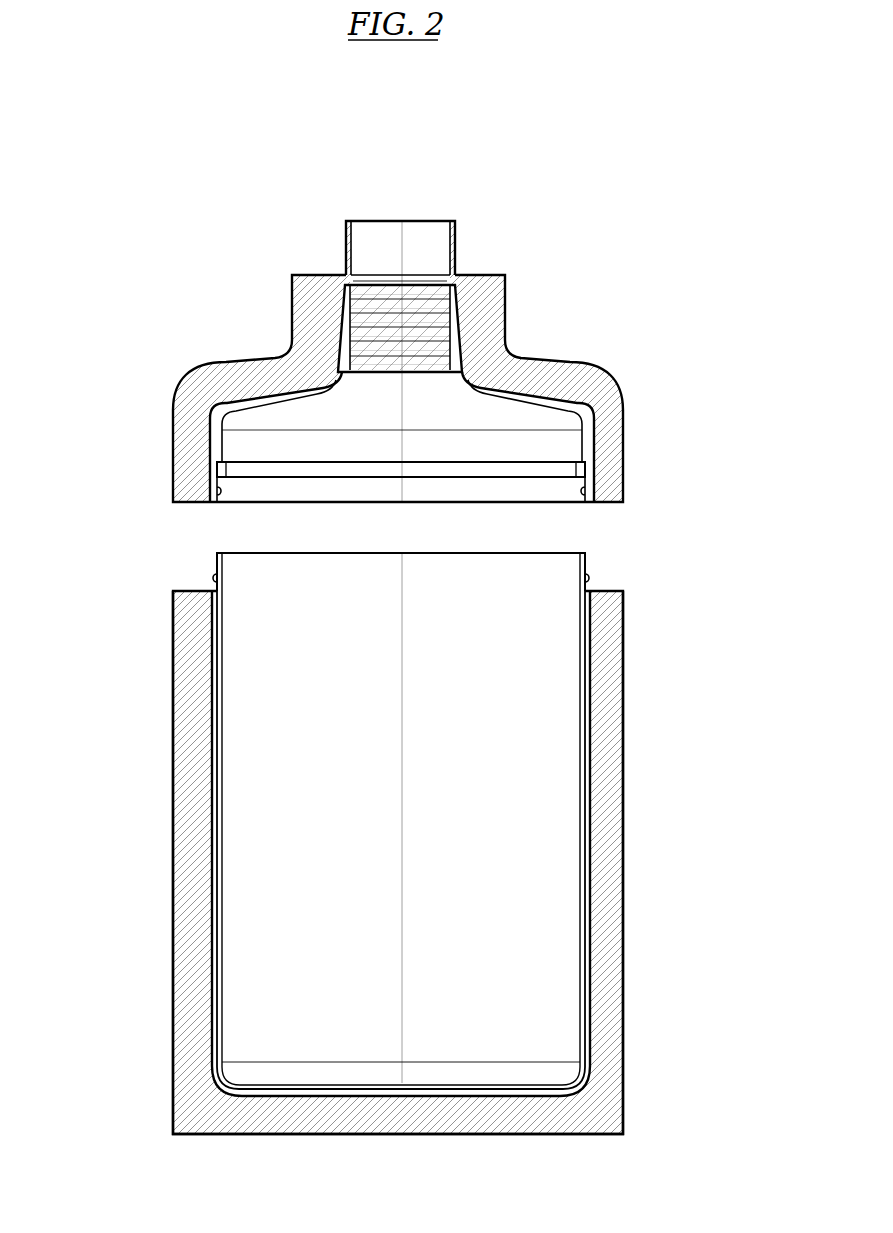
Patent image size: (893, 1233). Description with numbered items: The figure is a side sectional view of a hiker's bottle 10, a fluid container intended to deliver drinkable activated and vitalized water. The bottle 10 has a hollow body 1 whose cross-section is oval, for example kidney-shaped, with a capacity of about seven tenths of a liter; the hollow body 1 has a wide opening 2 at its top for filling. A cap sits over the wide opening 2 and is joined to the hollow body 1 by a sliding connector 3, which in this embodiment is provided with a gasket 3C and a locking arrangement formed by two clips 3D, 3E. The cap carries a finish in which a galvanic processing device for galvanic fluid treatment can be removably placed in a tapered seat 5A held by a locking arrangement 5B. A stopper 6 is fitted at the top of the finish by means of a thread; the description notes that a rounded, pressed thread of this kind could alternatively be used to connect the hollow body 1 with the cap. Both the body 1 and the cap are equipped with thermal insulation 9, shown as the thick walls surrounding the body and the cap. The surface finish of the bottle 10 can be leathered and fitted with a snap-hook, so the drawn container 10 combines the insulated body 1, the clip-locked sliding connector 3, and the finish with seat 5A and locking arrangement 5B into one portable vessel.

The hiker's bottle 10 is at (400, 639).
The stopper 6 is at (352, 235).
The tapered seat 5A is at (460, 322).
The locking arrangement 5B is at (460, 378).
The thermal insulation 9 is at (220, 362).
The gasket 3C is at (218, 470).
The clip 3E is at (578, 500).
The connector 3 is at (600, 558).
The clip 3D is at (590, 578).
The wide opening 2 is at (218, 557).
The hollow body 1 is at (585, 677).